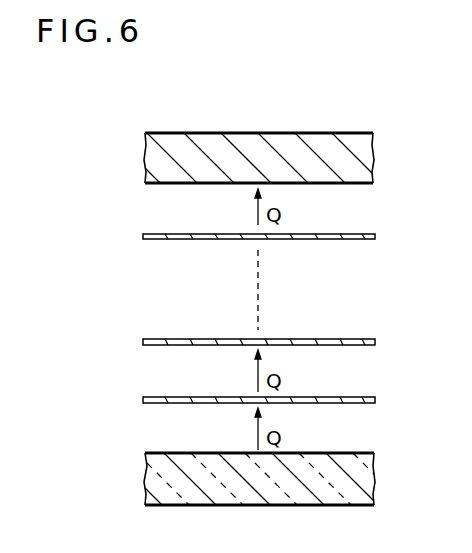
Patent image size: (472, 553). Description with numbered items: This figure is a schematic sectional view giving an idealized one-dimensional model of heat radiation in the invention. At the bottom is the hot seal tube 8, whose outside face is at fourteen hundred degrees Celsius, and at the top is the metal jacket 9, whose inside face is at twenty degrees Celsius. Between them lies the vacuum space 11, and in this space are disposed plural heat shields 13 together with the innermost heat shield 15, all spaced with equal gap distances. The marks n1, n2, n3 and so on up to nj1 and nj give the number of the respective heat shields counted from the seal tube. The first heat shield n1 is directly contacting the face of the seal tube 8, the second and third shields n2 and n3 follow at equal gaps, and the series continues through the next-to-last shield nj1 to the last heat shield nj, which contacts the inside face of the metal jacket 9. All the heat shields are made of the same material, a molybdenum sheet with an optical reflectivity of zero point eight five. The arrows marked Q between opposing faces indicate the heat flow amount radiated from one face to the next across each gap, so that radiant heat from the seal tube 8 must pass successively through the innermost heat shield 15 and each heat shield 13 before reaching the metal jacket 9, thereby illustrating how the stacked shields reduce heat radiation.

The seal tube 8 is at (373, 486).
The metal jacket 9 is at (343, 150).
The vacuum space 11 is at (362, 276).
The heat shields 13 is at (146, 338).
The innermost heat shield 15 is at (143, 400).
The last heat shield number nj is at (353, 188).
The heat shield number n_(j-1) nj1 is at (356, 232).
The heat shield number n_3 n3 is at (348, 337).
The heat shield number n_2 n2 is at (352, 396).
The first heat shield number n1 is at (358, 452).